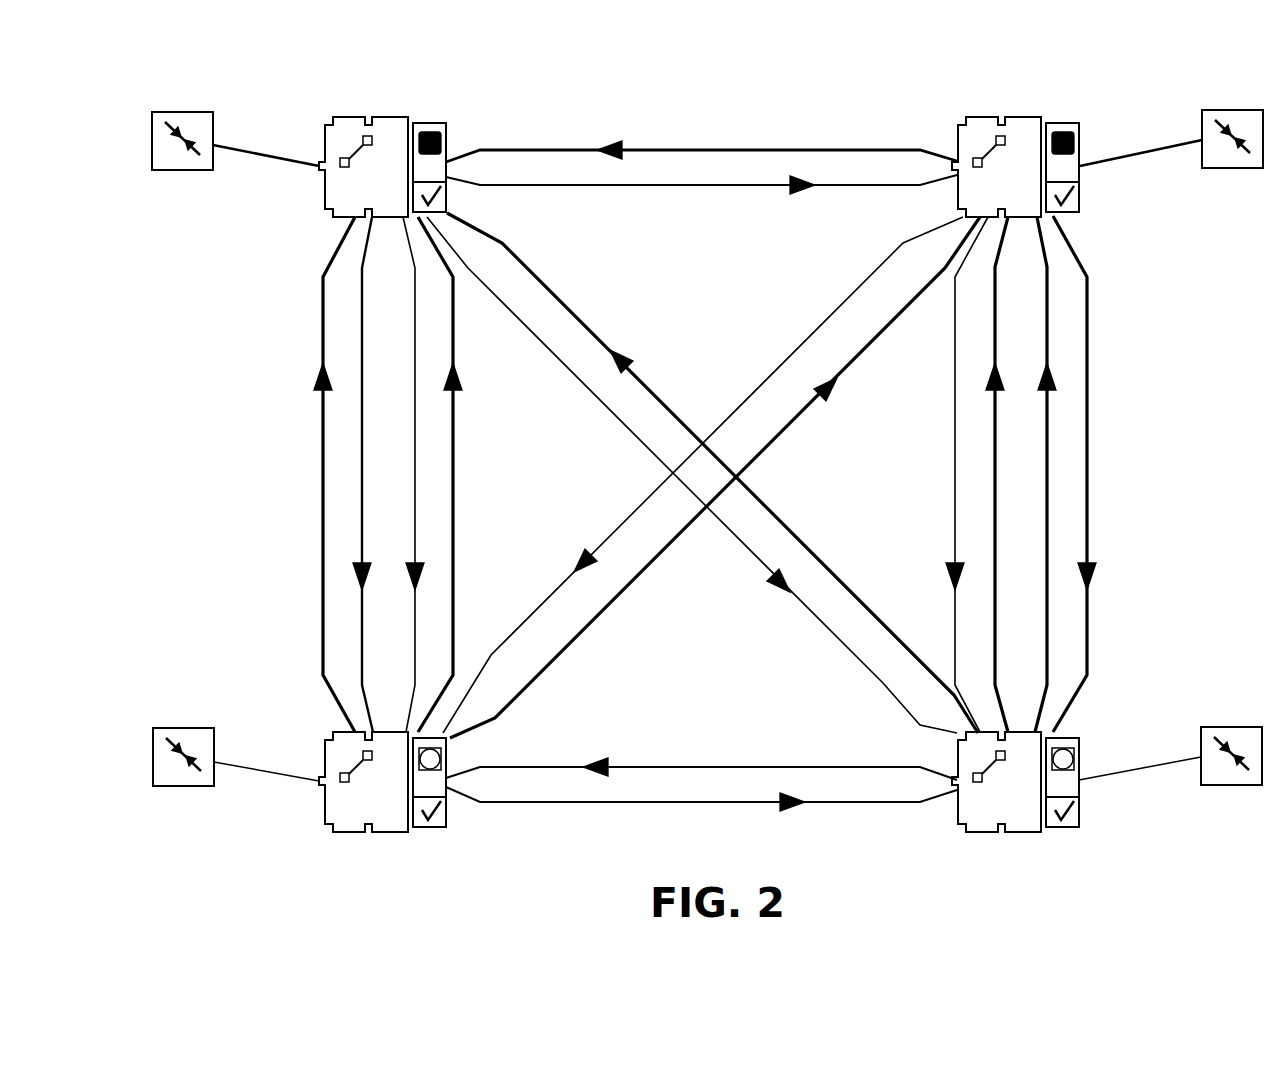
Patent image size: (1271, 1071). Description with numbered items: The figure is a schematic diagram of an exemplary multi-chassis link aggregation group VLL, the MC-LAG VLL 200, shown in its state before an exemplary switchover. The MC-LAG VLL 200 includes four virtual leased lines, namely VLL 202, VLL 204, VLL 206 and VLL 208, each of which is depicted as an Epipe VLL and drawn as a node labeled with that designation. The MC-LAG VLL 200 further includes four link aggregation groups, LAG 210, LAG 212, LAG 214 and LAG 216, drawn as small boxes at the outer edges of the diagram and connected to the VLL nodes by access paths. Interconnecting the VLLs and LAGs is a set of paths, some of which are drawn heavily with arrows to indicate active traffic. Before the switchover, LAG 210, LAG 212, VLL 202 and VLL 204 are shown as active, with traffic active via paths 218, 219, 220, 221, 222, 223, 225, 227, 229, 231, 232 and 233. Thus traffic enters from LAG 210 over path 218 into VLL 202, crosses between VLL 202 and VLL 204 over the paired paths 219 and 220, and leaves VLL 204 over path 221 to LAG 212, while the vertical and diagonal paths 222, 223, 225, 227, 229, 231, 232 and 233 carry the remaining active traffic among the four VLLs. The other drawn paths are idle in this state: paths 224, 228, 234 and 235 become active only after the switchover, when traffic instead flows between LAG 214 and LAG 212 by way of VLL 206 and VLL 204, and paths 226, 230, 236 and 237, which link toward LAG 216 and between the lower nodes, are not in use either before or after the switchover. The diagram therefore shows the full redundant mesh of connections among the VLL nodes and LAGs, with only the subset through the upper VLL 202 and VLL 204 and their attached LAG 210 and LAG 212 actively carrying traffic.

The MC-LAG VLL 200 is at (940, 905).
The VLL 202 is at (388, 117).
The VLL 204 is at (985, 117).
The VLL 206 is at (350, 833).
The VLL 208 is at (982, 833).
The LAG 210 is at (183, 170).
The LAG 212 is at (1232, 168).
The LAG 214 is at (183, 786).
The LAG 216 is at (1232, 785).
The path 218 is at (280, 153).
The path 219 is at (692, 148).
The path 220 is at (710, 188).
The path 221 is at (1172, 142).
The path 222 is at (323, 342).
The path 223 is at (362, 430).
The path 224 is at (415, 508).
The path 225 is at (453, 620).
The path 226 is at (557, 360).
The path 227 is at (597, 333).
The path 228 is at (618, 530).
The path 229 is at (873, 343).
The path 230 is at (955, 460).
The path 231 is at (995, 327).
The path 232 is at (1050, 416).
The path 233 is at (1090, 462).
The path 234 is at (278, 770).
The path 235 is at (762, 765).
The path 236 is at (650, 802).
The path 237 is at (1160, 760).